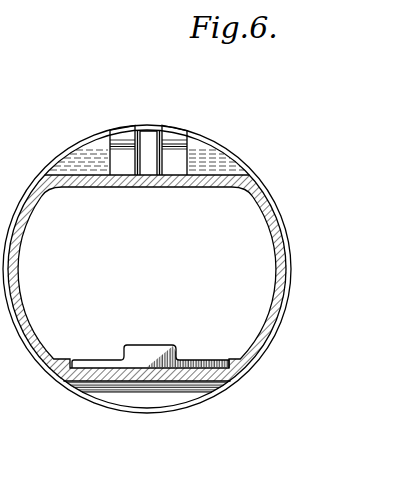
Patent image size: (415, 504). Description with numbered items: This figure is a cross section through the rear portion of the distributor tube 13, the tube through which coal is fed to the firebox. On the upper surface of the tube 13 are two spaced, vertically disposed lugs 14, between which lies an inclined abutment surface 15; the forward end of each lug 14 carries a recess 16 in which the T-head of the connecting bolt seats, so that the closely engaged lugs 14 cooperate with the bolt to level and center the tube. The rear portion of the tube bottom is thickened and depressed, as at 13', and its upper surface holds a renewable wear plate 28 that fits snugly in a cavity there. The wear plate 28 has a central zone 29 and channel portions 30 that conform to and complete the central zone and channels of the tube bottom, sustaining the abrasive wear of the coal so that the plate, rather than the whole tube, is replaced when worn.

The distributor tube 13 is at (157, 269).
The depressed part of the tube bottom 13' is at (147, 405).
The lugs 14 is at (120, 126).
The inclined abutment surface 15 is at (148, 136).
The recess 16 is at (120, 157).
The renewable wear plate 28 is at (158, 354).
The central zone of the wear plate 29 is at (144, 345).
The channel portions of the wear plate 30 is at (101, 350).